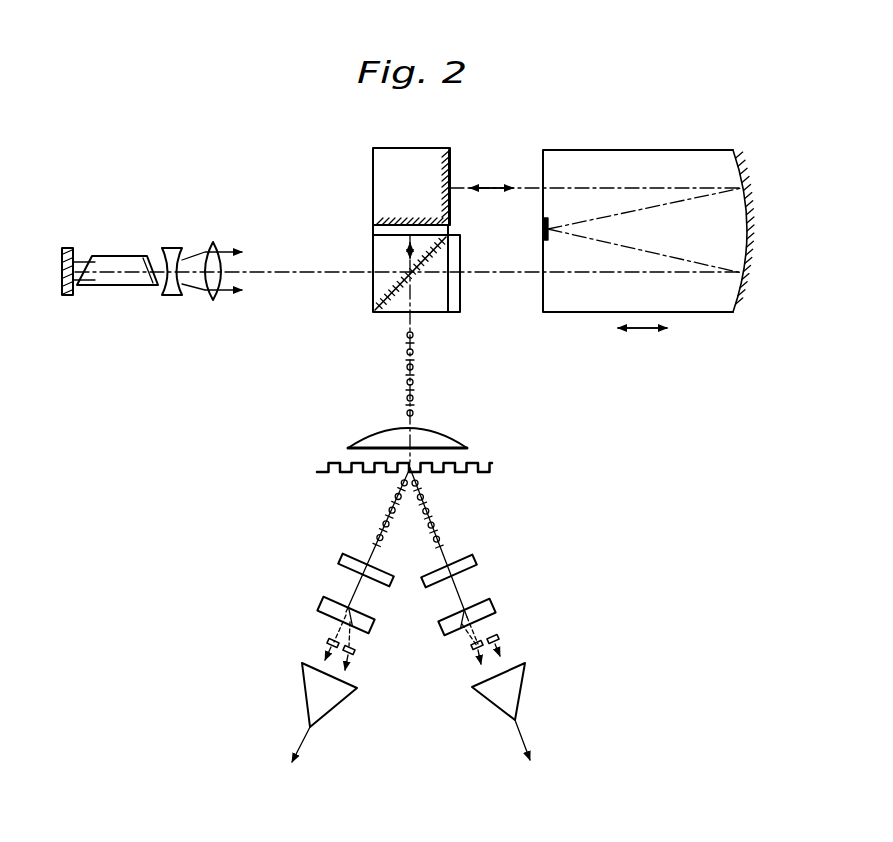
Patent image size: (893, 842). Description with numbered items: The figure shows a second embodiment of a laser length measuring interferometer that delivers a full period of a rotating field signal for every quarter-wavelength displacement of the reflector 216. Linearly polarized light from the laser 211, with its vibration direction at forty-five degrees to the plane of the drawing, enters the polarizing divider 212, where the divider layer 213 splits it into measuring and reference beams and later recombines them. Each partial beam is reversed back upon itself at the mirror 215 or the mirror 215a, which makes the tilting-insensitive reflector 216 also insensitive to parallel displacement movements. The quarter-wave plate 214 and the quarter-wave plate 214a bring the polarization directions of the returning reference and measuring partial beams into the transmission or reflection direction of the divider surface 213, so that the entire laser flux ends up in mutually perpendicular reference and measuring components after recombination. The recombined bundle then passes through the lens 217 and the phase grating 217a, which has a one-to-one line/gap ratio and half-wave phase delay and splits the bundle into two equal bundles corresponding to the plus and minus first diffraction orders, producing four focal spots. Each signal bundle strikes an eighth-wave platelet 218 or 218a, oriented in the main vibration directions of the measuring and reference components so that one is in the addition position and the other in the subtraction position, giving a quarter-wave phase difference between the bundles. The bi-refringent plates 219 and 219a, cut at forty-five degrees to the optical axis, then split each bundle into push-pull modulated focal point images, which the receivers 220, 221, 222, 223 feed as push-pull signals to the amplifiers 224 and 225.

The laser 211 is at (222, 229).
The polarizing divider 212 is at (398, 303).
The divider layer 213 is at (378, 290).
The λ/4 plate 214 is at (383, 229).
The λ/4 plate 214a is at (457, 297).
The mirror 215 is at (388, 218).
The mirror 215a is at (450, 168).
The reflector 216 is at (637, 158).
The lens 217 is at (440, 443).
The phase grating 217a is at (470, 473).
The λ/8 platelet 218 is at (355, 552).
The λ/8 platelet 218a is at (465, 563).
The bi-refringent plate 219 is at (336, 600).
The bi-refringent plate 219a is at (485, 605).
The receiver 220 is at (328, 640).
The receiver 221 is at (352, 651).
The receiver 222 is at (470, 646).
The receiver 223 is at (500, 640).
The amplifier 224 is at (310, 695).
The amplifier 225 is at (510, 695).